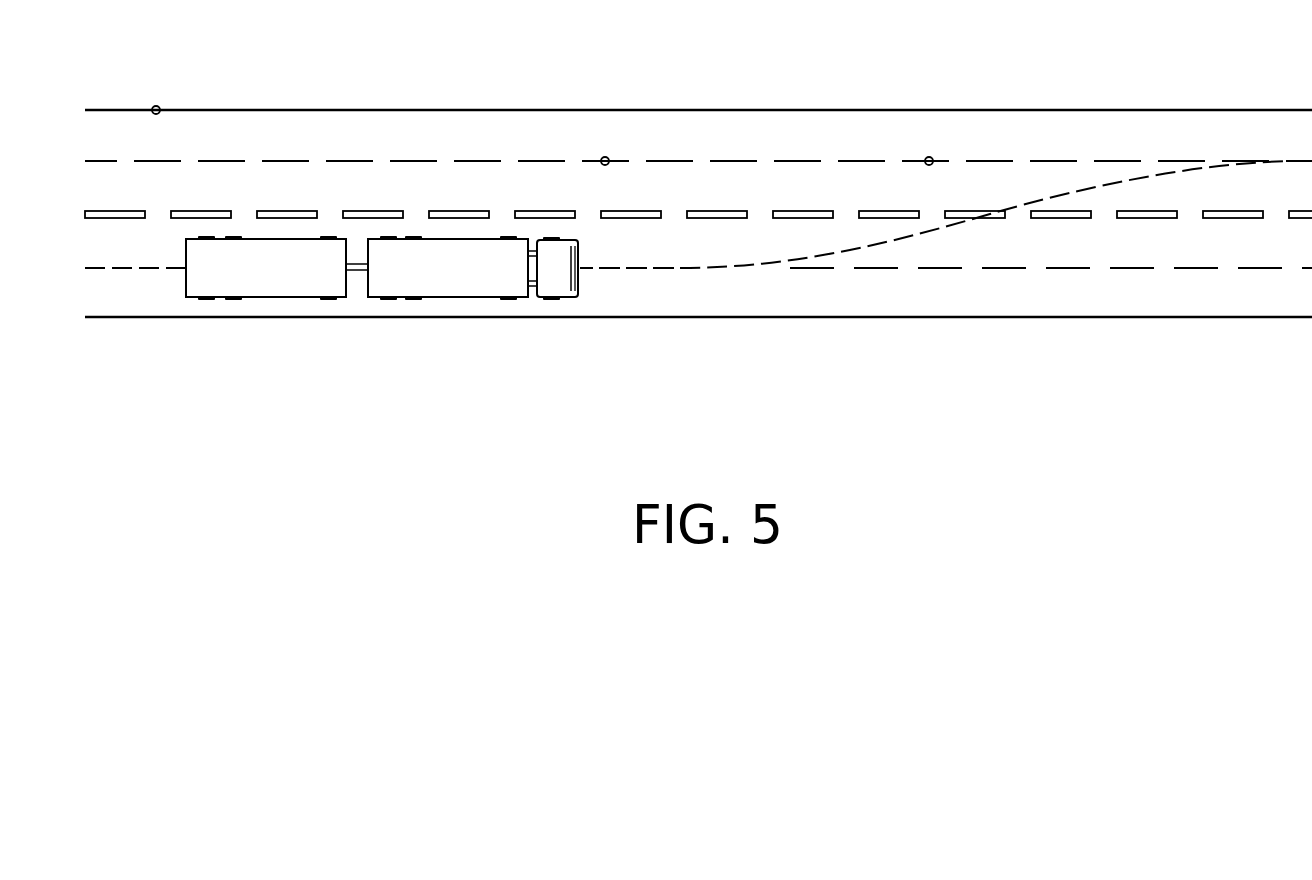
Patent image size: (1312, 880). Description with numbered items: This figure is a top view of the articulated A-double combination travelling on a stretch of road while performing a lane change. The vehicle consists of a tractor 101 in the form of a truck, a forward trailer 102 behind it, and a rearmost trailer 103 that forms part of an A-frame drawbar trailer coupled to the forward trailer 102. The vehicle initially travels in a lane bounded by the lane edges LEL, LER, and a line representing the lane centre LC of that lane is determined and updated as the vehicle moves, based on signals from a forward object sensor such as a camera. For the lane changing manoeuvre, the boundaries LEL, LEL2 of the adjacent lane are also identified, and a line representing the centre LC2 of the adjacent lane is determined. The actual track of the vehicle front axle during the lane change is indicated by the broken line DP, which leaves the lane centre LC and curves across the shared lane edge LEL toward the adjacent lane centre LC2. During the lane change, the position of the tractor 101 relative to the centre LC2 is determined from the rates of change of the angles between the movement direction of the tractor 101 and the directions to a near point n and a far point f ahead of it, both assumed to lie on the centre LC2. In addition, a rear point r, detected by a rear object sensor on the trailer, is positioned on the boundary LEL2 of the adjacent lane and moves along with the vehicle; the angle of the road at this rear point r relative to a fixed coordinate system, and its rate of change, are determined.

The tractor 101 is at (562, 299).
The forward trailer 102 is at (446, 298).
The rearmost trailer 103 is at (264, 298).
The lane edge LEL is at (458, 212).
The boundary of adjacent lane LEL2 is at (784, 109).
The lane edge LER is at (784, 318).
The lane centre LC is at (655, 270).
The centre of adjacent lane LC2 is at (1304, 162).
The actual track of vehicle front axle DP is at (908, 234).
The rear point r is at (156, 106).
The near point n is at (605, 157).
The far point f is at (929, 157).